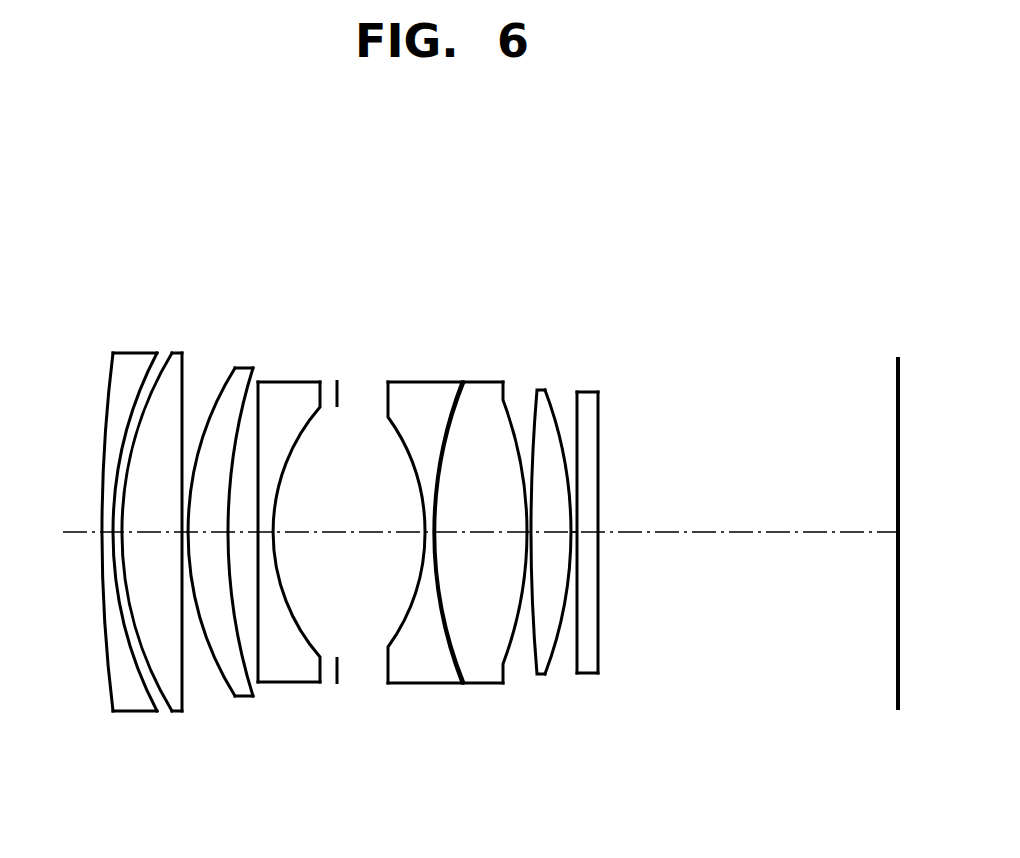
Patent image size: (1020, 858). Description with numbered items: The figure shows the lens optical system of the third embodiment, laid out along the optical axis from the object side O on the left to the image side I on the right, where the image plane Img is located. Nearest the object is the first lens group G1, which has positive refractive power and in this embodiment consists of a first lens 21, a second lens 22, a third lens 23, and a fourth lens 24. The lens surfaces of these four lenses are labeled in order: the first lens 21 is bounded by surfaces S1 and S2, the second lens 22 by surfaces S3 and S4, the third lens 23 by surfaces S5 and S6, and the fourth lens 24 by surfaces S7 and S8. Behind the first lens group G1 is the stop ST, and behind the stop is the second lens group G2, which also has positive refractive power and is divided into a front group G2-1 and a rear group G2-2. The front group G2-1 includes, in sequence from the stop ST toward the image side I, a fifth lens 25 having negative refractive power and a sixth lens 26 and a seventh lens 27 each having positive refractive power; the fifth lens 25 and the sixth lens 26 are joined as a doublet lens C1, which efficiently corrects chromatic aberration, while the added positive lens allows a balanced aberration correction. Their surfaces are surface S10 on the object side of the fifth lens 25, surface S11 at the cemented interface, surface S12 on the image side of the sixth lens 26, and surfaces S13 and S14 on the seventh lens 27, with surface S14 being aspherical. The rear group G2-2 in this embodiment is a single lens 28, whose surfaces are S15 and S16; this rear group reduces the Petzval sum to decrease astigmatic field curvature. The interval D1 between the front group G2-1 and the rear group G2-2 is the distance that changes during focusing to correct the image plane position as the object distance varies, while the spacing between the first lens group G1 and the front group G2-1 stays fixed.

The first lens 21 is at (127, 710).
The second lens 22 is at (173, 712).
The third lens 23 is at (240, 697).
The fourth lens 24 is at (302, 683).
The fifth lens 25 is at (409, 685).
The sixth lens 26 is at (483, 685).
The seventh lens 27 is at (538, 678).
The single lens 28 is at (585, 678).
The lens surface S1 is at (109, 392).
The lens surface S2 is at (123, 441).
The lens surface S3 is at (153, 370).
The lens surface S4 is at (184, 378).
The lens surface S5 is at (224, 382).
The lens surface S6 is at (245, 402).
The lens surface S7 is at (260, 431).
The lens surface S8 is at (297, 441).
The lens surface S10 is at (390, 421).
The lens surface S11 is at (456, 396).
The lens surface S12 is at (506, 398).
The lens surface S13 is at (528, 415).
The lens surface S14 is at (556, 412).
The lens surface S15 is at (581, 446).
The lens surface S16 is at (600, 487).
The stop ST is at (339, 672).
The first lens group G1 is at (337, 212).
The second lens group G2 is at (453, 212).
The front group G2-1 is at (390, 277).
The rear group G2-2 is at (565, 277).
The doublet lens C1 is at (488, 785).
The interval D1 is at (573, 555).
The object side O is at (466, 531).
The image side I is at (901, 557).
The image plane Img is at (896, 557).